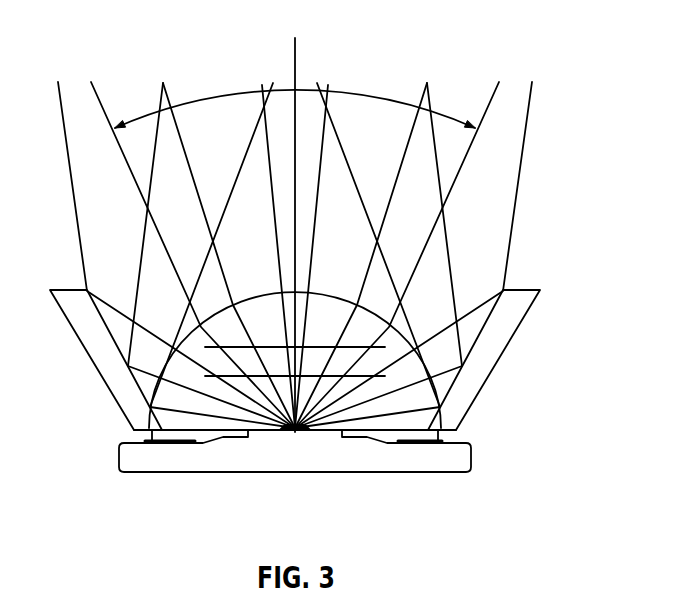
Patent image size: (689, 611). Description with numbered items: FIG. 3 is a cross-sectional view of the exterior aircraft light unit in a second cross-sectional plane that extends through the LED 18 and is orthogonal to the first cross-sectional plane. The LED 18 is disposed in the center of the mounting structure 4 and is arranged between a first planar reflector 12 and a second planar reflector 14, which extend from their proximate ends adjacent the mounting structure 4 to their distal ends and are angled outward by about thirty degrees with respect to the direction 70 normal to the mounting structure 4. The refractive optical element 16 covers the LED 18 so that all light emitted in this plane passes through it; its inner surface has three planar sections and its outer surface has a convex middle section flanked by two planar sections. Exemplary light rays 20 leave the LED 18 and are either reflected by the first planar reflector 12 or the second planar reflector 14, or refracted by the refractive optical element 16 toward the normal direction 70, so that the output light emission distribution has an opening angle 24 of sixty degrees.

The mounting structure 4 is at (166, 473).
The first planar reflector 12 is at (515, 330).
The second planar reflector 14 is at (103, 378).
The refractive optical element 16 is at (412, 405).
The LED 18 is at (294, 433).
The exemplary light rays 20 is at (528, 122).
The opening angle 24 is at (355, 94).
The normal direction 70 is at (295, 53).